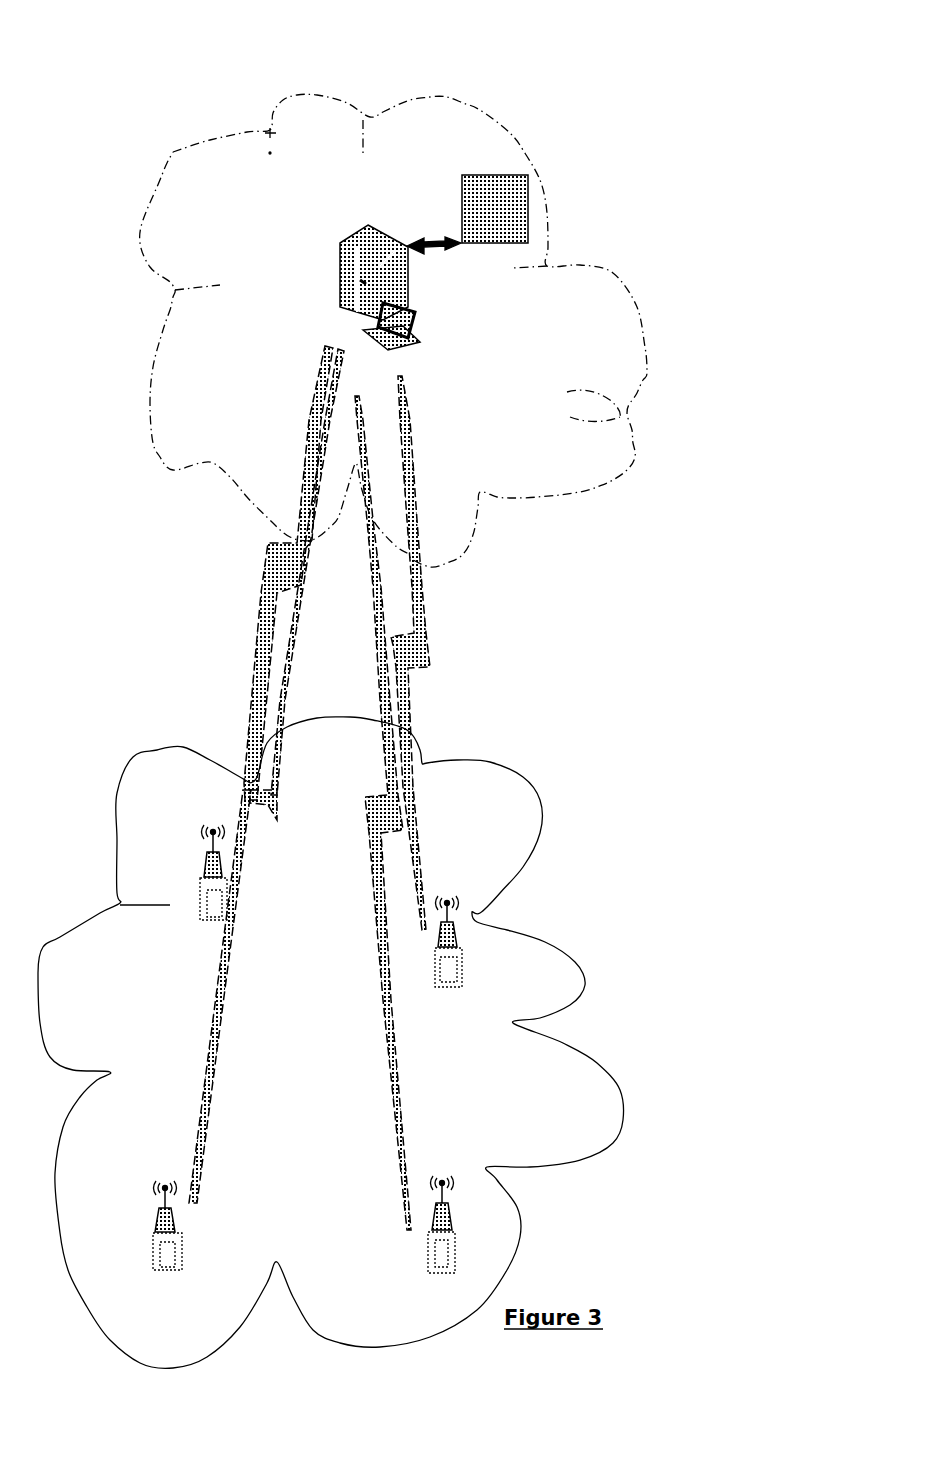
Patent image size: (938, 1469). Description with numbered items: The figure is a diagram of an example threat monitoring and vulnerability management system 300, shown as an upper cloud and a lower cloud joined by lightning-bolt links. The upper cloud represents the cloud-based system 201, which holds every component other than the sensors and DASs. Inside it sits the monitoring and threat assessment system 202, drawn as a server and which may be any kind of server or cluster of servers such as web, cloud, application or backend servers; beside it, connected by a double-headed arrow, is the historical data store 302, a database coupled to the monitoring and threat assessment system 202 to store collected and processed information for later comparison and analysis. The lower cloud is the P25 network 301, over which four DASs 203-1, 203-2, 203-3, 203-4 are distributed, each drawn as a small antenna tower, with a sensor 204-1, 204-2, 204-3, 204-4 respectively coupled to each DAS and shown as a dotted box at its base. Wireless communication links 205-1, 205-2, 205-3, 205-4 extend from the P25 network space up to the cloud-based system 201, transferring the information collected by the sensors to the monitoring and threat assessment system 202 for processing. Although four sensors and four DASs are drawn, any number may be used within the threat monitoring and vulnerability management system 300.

The threat monitoring and vulnerability management system 300 is at (350, 50).
The cloud-based system 201 is at (173, 155).
The monitoring and threat assessment system 202 is at (342, 241).
The historical data store 302 is at (477, 175).
The P25 network 301 is at (143, 760).
The wireless communication link 205-1 is at (267, 587).
The wireless communication link 205-2 is at (222, 1042).
The wireless communication link 205-3 is at (403, 1113).
The wireless communication link 205-4 is at (420, 600).
The DAS 203-1 is at (204, 880).
The DAS 203-2 is at (175, 1223).
The DAS 203-3 is at (500, 1212).
The DAS 203-4 is at (450, 921).
The sensor 204-1 is at (218, 913).
The sensor 204-2 is at (163, 1257).
The sensor 204-3 is at (435, 1265).
The sensor 204-4 is at (447, 982).